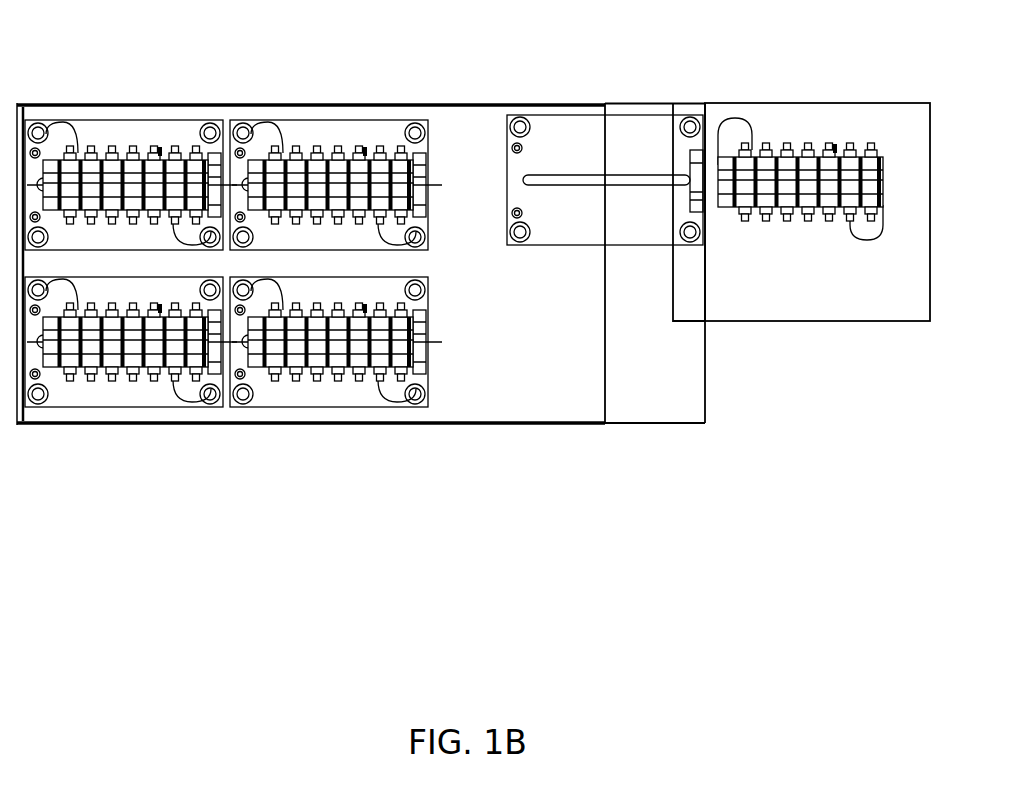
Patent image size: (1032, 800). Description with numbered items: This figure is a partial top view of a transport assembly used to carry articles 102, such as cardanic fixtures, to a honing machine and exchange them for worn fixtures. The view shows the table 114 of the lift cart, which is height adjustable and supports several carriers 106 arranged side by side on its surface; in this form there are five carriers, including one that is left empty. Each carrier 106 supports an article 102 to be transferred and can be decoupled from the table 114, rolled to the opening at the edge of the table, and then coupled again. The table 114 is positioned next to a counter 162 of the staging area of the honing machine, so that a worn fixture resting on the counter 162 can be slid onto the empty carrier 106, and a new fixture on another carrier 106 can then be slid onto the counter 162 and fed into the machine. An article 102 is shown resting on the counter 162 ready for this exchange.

The article 102 is at (765, 160).
The carrier 106 is at (364, 262).
The table 114 is at (498, 391).
The counter 162 is at (877, 103).